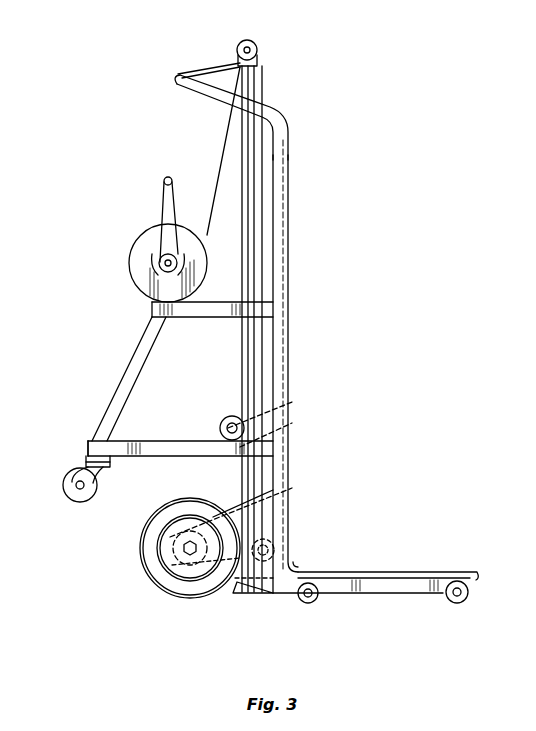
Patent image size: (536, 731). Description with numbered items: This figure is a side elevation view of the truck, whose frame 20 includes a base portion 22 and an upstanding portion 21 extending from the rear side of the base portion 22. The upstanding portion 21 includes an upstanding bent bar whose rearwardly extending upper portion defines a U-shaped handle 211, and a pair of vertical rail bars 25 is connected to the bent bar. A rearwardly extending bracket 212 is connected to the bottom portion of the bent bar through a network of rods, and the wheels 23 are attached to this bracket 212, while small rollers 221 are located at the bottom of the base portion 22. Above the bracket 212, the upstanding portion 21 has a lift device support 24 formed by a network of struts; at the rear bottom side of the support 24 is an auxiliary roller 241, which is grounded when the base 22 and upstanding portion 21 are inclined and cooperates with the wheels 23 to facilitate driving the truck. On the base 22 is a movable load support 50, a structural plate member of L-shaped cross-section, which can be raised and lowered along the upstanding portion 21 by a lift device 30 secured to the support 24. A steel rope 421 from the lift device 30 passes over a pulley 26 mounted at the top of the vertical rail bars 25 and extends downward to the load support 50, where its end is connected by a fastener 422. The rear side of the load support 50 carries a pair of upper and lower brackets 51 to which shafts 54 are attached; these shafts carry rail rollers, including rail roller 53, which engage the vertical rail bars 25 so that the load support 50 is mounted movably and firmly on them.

The frame 20 is at (112, 508).
The upstanding portion 21 is at (284, 322).
The U-shaped handle 211 is at (200, 97).
The rearwardly extending bracket 212 is at (262, 598).
The base portion 22 is at (398, 594).
The small rollers 221 is at (312, 604).
The wheels 23 is at (148, 554).
The lift device support 24 is at (123, 378).
The auxiliary roller 241 is at (70, 472).
The vertical rail bars 25 is at (246, 150).
The pulley 26 is at (251, 40).
The lift device 30 is at (156, 222).
The steel rope 421 is at (263, 89).
The fastener 422 is at (291, 416).
The movable load support 50 is at (418, 571).
The upper and lower brackets 51 is at (296, 462).
The rail roller 53 is at (294, 536).
The shafts 54 is at (225, 424).